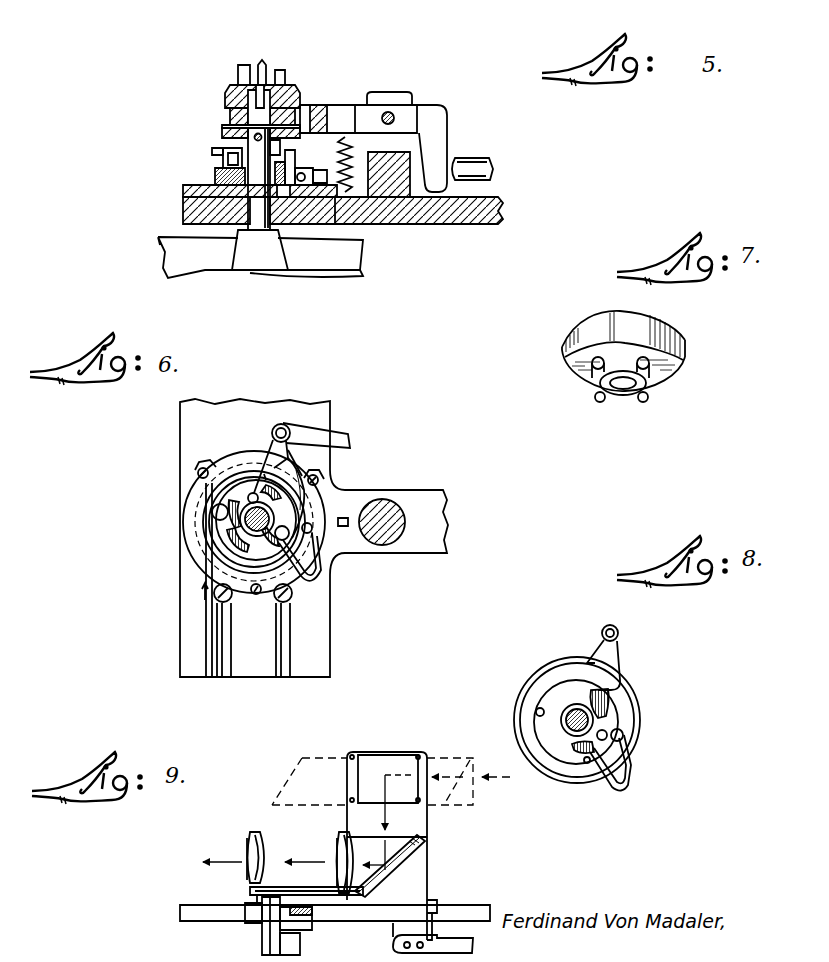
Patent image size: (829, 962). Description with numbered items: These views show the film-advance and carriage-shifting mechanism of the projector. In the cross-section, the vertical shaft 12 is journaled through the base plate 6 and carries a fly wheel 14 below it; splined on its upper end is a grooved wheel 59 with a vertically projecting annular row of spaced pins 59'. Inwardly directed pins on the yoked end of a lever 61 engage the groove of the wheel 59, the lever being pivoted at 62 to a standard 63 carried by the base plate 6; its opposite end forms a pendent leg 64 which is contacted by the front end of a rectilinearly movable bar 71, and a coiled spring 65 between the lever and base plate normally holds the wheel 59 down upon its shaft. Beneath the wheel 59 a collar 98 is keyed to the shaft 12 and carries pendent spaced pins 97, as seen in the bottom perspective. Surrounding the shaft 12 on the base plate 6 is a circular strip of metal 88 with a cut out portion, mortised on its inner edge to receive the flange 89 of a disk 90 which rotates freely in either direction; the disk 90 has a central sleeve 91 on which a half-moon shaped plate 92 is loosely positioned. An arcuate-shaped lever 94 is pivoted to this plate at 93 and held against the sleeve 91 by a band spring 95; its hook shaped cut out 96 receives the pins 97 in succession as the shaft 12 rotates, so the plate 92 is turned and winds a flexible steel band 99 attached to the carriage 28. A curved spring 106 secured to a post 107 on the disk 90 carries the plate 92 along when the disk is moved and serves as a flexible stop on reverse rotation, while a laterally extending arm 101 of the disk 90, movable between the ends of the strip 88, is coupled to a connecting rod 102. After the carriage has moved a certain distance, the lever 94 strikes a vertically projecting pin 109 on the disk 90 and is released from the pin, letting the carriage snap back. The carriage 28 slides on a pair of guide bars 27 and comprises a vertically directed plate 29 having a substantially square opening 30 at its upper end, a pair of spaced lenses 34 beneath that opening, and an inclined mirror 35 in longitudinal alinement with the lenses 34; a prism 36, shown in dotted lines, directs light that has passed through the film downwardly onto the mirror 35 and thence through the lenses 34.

In FIG. 5, the base plate 6 is at (203, 142).
In FIG. 6, the base plate 6 is at (318, 420).
In FIG. 5, the vertical shaft 12 is at (255, 150).
In FIG. 8, the vertical shaft 12 is at (557, 730).
In FIG. 5, the fly wheel 14 is at (345, 258).
In FIG. 6, the guide bars 27 is at (267, 648).
In FIG. 9, the guide bars 27 is at (203, 912).
In FIG. 9, the carriage 28 is at (428, 878).
In FIG. 9, the vertically directed plate 29 is at (382, 752).
In FIG. 9, the opening 30 is at (400, 770).
In FIG. 9, the lenses 34 is at (250, 848).
In FIG. 9, the inclined mirror 35 is at (412, 860).
In FIG. 9, the prism 36 is at (330, 752).
In FIG. 5, the wheel 59 is at (280, 93).
In FIG. 5, the pins 59' is at (241, 42).
In FIG. 5, the lever 61 is at (340, 103).
In FIG. 5, the pivot 62 is at (392, 112).
In FIG. 5, the standard 63 is at (407, 170).
In FIG. 6, the standard 63 is at (385, 517).
In FIG. 5, the pendent leg 64 is at (433, 177).
In FIG. 5, the coiled spring 65 is at (353, 143).
In FIG. 5, the rectilinearly movable bar 71 is at (483, 167).
In FIG. 6, the circular strip of metal 88 is at (190, 488).
In FIG. 6, the flange 89 is at (226, 470).
In FIG. 6, the disk 90 is at (298, 472).
In FIG. 8, the disk 90 is at (555, 668).
In FIG. 6, the sleeve 91 is at (243, 527).
In FIG. 8, the sleeve 91 is at (567, 712).
In FIG. 8, the half-moon shaped plate 92 is at (573, 670).
In FIG. 6, the pivot 93 is at (212, 513).
In FIG. 6, the arcuate-shaped lever 94 is at (244, 490).
In FIG. 6, the band spring 95 is at (237, 535).
In FIG. 6, the hook shaped cut out 96 is at (282, 424).
In FIG. 5, the pendent spaced pins 97 is at (217, 160).
In FIG. 7, the pendent spaced pins 97 is at (600, 395).
In FIG. 5, the collar 98 is at (225, 125).
In FIG. 7, the collar 98 is at (582, 335).
In FIG. 6, the flexible steel band 99 is at (207, 603).
In FIG. 6, the laterally extending arm 101 is at (284, 455).
In FIG. 8, the laterally extending arm 101 is at (605, 660).
In FIG. 6, the connecting rod 102 is at (345, 434).
In FIG. 6, the curved spring 106 is at (318, 557).
In FIG. 8, the curved spring 106 is at (629, 768).
In FIG. 6, the post 107 is at (312, 526).
In FIG. 8, the post 107 is at (623, 738).
In FIG. 6, the pin 109 is at (302, 562).
In FIG. 8, the pin 109 is at (612, 725).